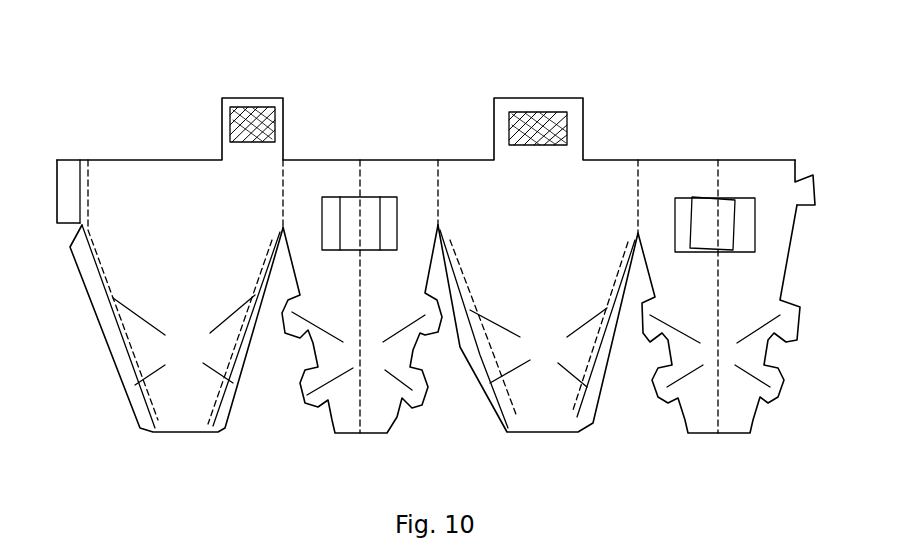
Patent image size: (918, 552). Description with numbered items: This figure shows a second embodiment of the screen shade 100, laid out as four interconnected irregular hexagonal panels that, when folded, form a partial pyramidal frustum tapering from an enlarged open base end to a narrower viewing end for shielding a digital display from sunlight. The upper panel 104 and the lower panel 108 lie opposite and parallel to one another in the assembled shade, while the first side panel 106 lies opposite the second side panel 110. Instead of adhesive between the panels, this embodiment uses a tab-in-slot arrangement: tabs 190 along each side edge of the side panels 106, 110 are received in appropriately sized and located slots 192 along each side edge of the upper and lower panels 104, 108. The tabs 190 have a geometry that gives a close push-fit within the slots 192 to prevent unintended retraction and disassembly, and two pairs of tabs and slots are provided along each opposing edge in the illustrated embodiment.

The screen shade 100 is at (140, 100).
The upper panel 104 is at (185, 418).
The first side panel 106 is at (377, 427).
The lower panel 108 is at (545, 428).
The second side panel 110 is at (738, 427).
The tabs 190 is at (536, 353).
The slots 192 is at (360, 341).